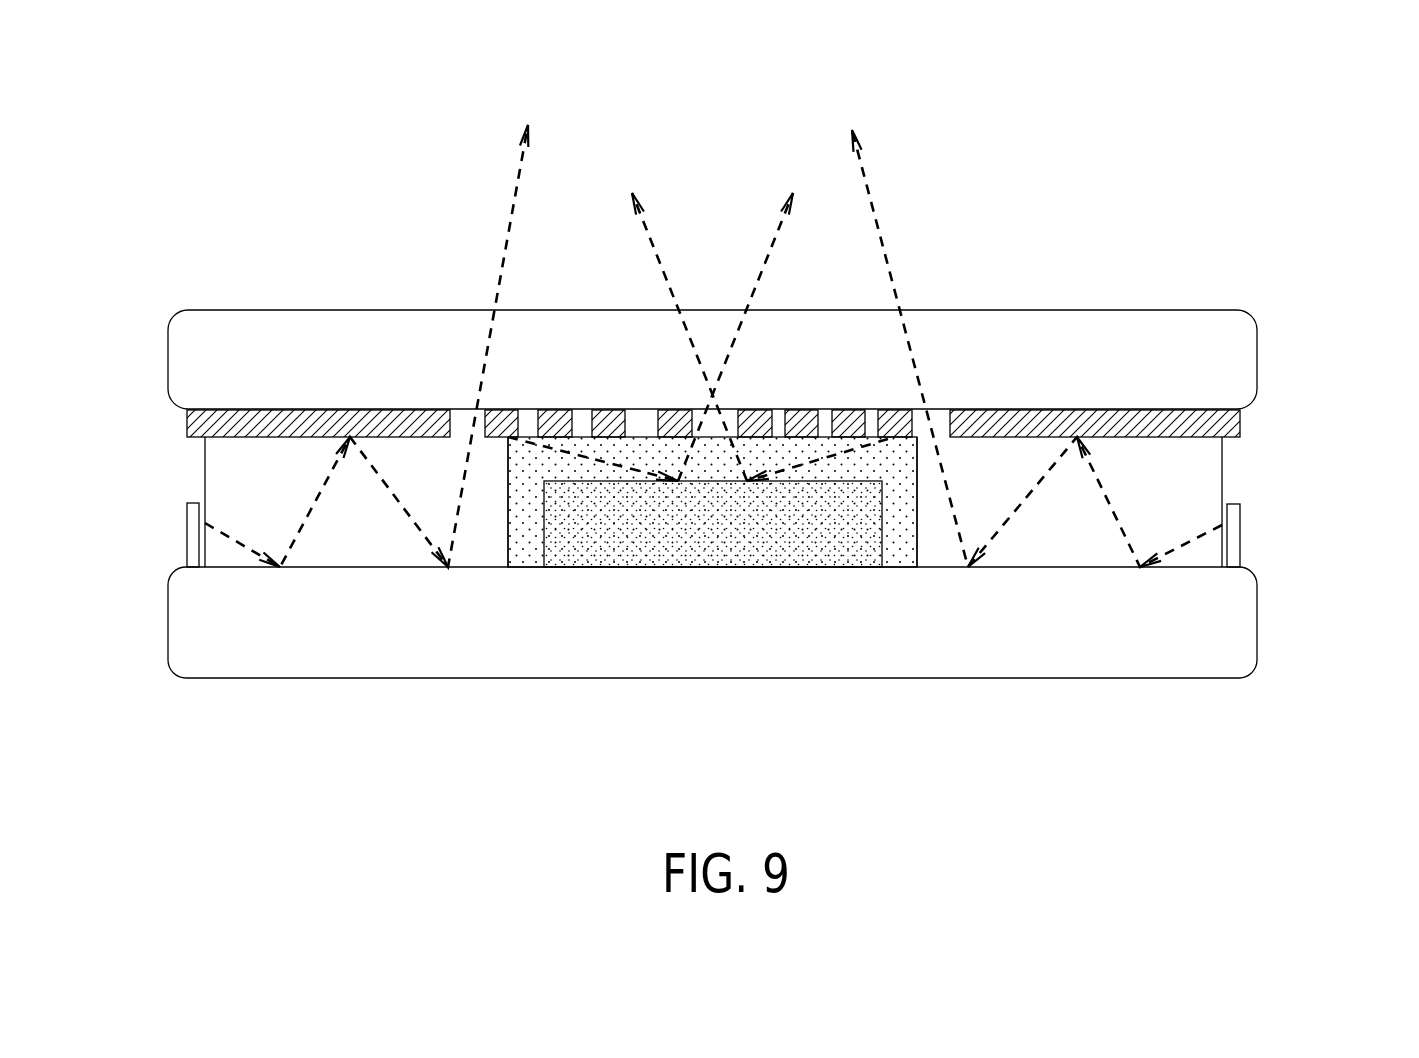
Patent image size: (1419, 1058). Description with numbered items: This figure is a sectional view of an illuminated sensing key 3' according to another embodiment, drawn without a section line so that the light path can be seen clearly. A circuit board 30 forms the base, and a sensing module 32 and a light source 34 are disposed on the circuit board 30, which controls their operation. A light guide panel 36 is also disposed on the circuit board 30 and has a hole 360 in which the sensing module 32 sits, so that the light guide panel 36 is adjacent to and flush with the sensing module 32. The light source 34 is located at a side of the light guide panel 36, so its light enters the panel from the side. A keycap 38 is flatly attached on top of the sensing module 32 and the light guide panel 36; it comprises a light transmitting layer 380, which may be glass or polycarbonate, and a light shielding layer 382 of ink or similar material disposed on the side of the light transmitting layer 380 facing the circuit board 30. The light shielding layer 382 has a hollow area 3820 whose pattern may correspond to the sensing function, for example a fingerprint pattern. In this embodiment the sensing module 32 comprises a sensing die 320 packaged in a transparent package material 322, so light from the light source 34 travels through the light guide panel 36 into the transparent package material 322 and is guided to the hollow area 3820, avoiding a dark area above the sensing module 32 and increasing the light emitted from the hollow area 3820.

The illuminated sensing key 3' is at (752, 428).
The circuit board 30 is at (743, 643).
The sensing module 32 is at (485, 729).
The sensing die 320 is at (598, 548).
The transparent package material 322 is at (528, 548).
The light source 34 is at (190, 552).
The light guide panel 36 is at (1200, 468).
The hole 360 is at (919, 541).
The keycap 38 is at (1354, 332).
The light transmitting layer 380 is at (1227, 357).
The light shielding layer 382 is at (1222, 425).
The hollow area 3820 is at (733, 408).